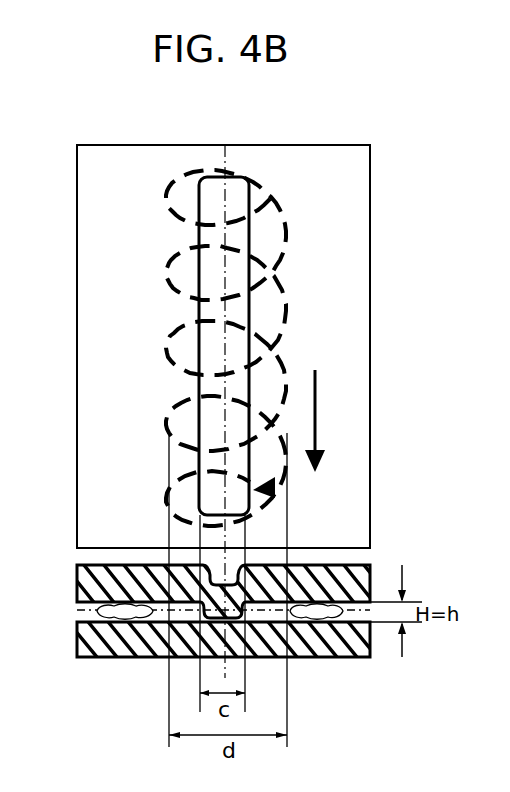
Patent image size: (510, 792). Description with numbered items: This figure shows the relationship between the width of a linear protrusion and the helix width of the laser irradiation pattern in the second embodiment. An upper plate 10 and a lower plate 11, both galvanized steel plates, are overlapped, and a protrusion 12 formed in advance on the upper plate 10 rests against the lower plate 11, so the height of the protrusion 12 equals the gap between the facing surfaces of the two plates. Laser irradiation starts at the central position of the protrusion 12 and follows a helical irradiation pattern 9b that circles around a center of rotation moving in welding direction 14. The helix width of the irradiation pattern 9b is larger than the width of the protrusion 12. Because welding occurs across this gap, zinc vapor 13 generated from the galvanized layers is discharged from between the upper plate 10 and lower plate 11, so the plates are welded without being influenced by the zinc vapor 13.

The irradiation pattern 9b is at (175, 337).
The upper plate 10 is at (95, 588).
The lower plate 11 is at (97, 640).
The protrusion 12 is at (249, 315).
The zinc vapor 13 is at (97, 608).
The welding direction 14 is at (316, 443).